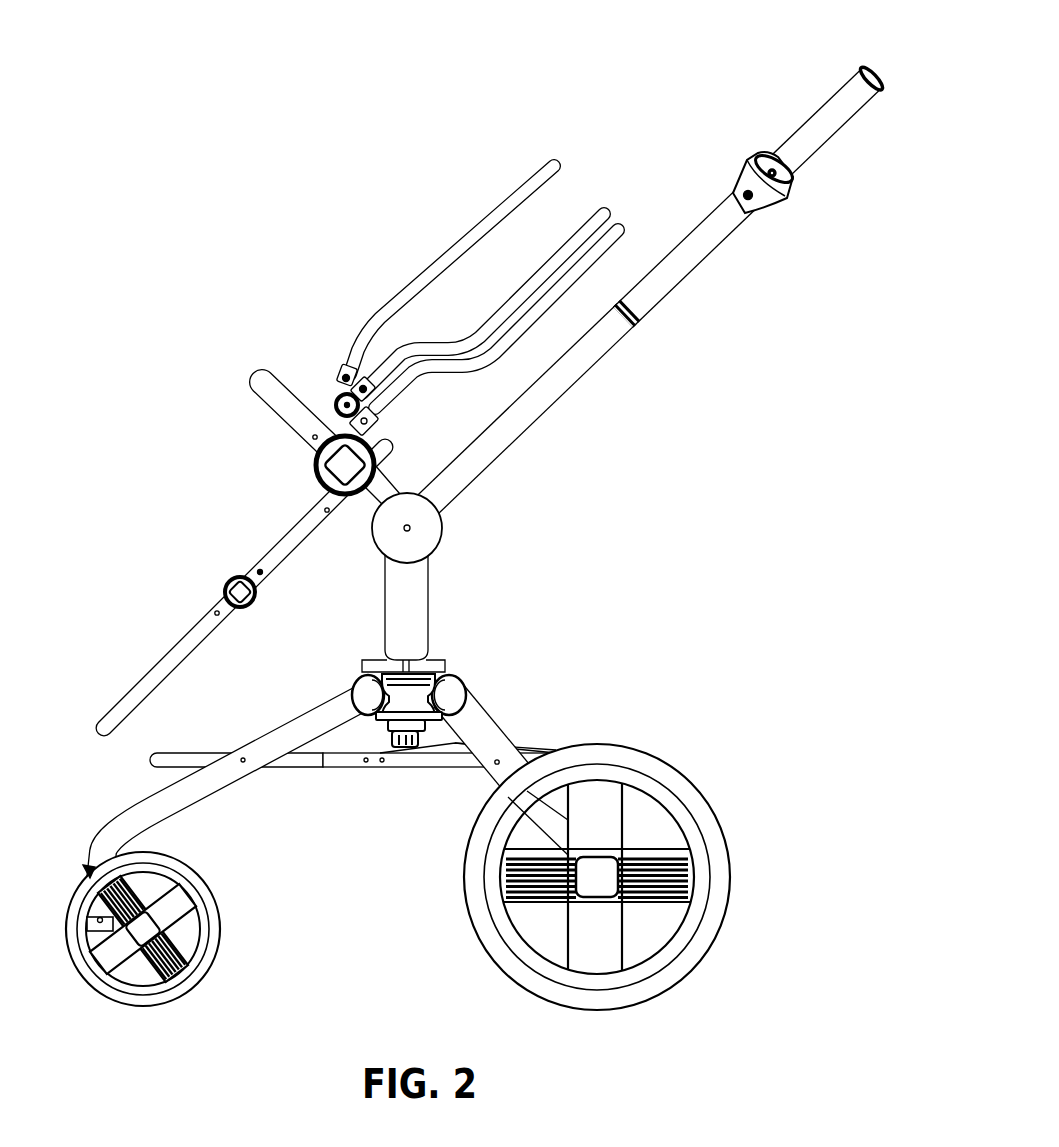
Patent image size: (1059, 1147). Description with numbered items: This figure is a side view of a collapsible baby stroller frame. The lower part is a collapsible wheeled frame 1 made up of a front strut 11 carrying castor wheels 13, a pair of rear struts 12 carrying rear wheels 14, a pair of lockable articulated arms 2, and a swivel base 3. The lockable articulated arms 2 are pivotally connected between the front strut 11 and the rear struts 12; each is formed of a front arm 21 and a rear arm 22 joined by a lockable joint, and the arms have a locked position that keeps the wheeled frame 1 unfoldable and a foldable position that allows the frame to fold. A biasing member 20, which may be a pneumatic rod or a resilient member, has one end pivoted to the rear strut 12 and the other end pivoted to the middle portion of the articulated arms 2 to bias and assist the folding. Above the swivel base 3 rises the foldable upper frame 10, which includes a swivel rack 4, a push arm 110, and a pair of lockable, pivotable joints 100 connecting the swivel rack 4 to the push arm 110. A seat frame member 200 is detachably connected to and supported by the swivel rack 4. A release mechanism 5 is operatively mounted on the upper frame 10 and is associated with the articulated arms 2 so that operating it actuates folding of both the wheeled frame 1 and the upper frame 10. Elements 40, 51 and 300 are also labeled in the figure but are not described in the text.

The collapsible wheeled frame 1 is at (415, 824).
The lockable articulated arms 2 is at (353, 862).
The swivel base 3 is at (428, 670).
The swivel rack 4 is at (423, 582).
The release mechanism 5 is at (756, 213).
The foldable upper frame 10 is at (651, 273).
The front strut 11 is at (183, 793).
The rear strut 12 is at (483, 720).
The castor wheels 13 is at (203, 965).
The rear wheels 14 is at (687, 970).
The biasing member 20 is at (453, 750).
The front arm 21 is at (295, 763).
The rear arm 22 is at (388, 765).
The support post 40 is at (397, 600).
The locking clamp 51 is at (741, 182).
The joints 100 is at (430, 538).
The push arm 110 is at (690, 253).
The seat frame member 200 is at (277, 492).
The handle grip end 300 is at (862, 63).